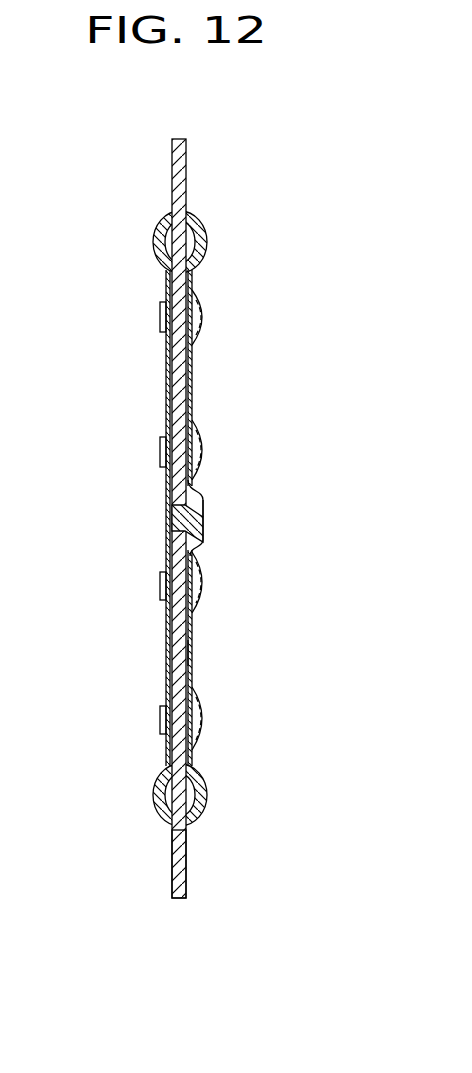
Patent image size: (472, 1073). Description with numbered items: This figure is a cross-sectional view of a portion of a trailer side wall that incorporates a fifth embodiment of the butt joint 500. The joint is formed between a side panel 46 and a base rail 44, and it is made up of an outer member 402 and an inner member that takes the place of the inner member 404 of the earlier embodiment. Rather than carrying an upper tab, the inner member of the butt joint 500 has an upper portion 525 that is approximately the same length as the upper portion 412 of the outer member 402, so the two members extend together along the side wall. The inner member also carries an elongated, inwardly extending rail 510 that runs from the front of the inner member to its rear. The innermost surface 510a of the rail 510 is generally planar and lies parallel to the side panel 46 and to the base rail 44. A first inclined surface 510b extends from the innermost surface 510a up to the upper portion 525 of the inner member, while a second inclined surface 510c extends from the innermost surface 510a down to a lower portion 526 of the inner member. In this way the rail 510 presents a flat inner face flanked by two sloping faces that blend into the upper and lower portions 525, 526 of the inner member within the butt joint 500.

The side panel 46 is at (172, 170).
The base rail 44 is at (173, 861).
The upper portion of the outer member 412 is at (167, 355).
The outer member 402 is at (166, 398).
The upper portion of the inner member 525 is at (194, 361).
The lower portion of the inner member 526 is at (195, 676).
The rail 510 is at (237, 513).
The innermost surface 510a is at (204, 533).
The first inclined surface 510b is at (191, 503).
The second inclined surface 510c is at (203, 550).
The butt joint 500 is at (229, 592).
The inner member 404 is at (190, 653).